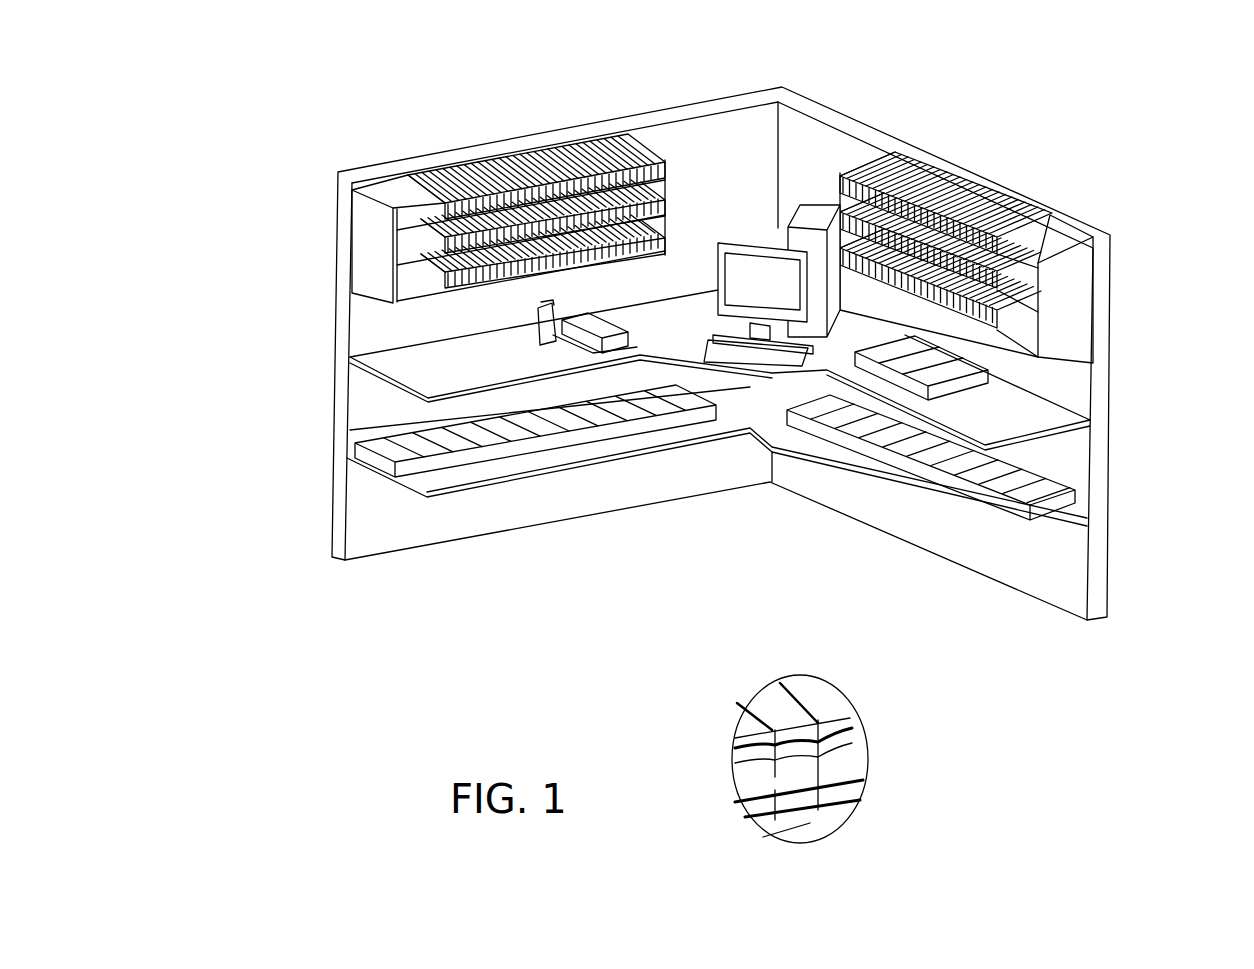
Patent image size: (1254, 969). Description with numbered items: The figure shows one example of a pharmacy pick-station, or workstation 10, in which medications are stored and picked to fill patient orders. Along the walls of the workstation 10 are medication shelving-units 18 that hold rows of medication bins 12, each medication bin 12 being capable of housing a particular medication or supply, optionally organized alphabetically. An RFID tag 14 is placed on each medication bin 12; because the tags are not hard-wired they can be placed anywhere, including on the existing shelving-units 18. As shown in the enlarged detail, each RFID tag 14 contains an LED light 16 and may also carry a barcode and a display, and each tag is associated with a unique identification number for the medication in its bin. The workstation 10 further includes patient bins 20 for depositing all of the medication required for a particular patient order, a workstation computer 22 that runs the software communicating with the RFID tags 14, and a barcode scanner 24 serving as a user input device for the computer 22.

The workstation 10 is at (1140, 430).
The medication bin 12 is at (440, 193).
The RFID tag 14 is at (440, 177).
The LED light 16 is at (787, 727).
The medication shelving-unit 18 is at (370, 247).
The patient bin 20 is at (587, 344).
The workstation computer 22 is at (737, 258).
The barcode scanner 24 is at (537, 330).